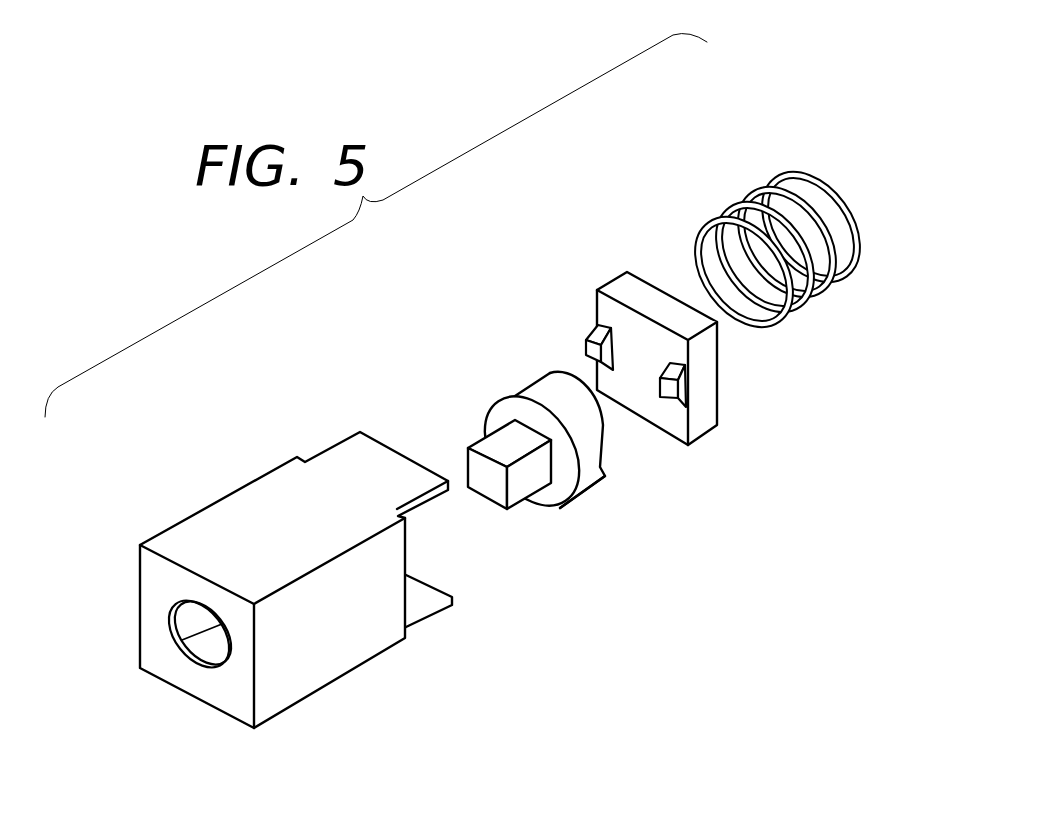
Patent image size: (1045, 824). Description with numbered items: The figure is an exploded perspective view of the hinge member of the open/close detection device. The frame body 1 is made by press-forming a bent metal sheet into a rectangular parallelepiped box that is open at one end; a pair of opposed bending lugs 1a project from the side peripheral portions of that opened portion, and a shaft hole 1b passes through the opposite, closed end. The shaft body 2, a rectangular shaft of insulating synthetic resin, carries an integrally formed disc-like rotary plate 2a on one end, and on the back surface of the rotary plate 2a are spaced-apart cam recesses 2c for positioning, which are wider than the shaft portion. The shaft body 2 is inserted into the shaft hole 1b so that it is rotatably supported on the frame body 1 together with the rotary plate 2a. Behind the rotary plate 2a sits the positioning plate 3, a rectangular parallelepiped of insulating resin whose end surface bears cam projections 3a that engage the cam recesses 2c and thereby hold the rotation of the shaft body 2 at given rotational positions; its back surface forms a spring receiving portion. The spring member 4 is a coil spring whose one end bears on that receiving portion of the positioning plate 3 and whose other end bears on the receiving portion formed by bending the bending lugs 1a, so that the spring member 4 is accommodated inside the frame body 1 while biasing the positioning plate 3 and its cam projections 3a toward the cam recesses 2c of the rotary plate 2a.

The frame body 1 is at (220, 495).
The bending lugs 1a is at (360, 453).
The shaft hole 1b is at (192, 618).
The shaft body 2 is at (498, 450).
The rotary plate 2a is at (548, 388).
The cam recesses 2c is at (608, 455).
The positioning plate 3 is at (607, 275).
The cam projections 3a is at (585, 347).
The spring member 4 is at (777, 187).